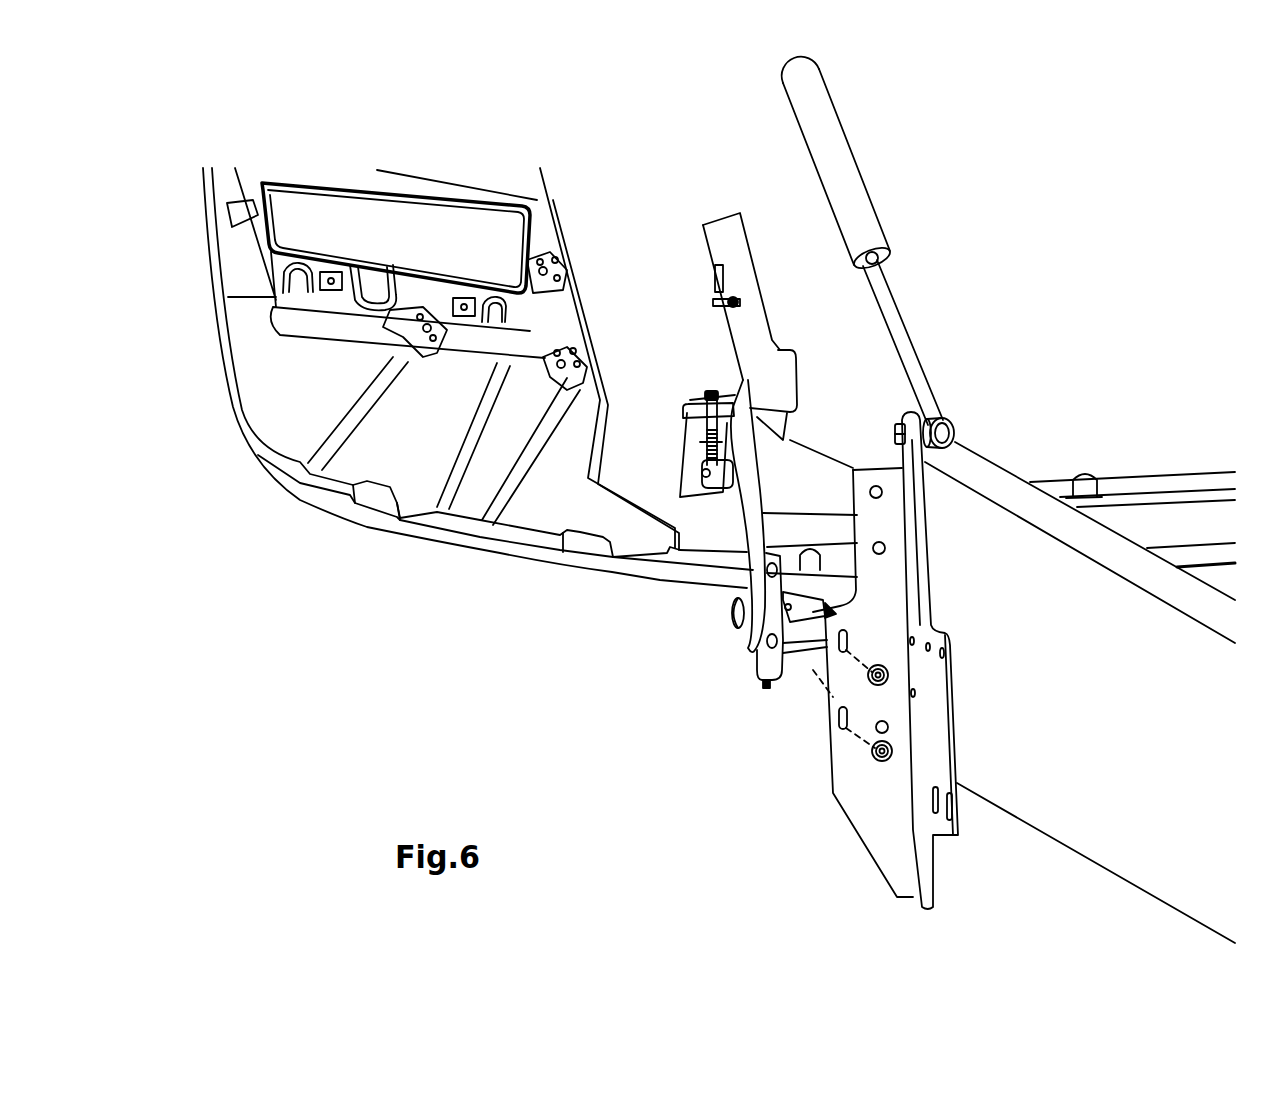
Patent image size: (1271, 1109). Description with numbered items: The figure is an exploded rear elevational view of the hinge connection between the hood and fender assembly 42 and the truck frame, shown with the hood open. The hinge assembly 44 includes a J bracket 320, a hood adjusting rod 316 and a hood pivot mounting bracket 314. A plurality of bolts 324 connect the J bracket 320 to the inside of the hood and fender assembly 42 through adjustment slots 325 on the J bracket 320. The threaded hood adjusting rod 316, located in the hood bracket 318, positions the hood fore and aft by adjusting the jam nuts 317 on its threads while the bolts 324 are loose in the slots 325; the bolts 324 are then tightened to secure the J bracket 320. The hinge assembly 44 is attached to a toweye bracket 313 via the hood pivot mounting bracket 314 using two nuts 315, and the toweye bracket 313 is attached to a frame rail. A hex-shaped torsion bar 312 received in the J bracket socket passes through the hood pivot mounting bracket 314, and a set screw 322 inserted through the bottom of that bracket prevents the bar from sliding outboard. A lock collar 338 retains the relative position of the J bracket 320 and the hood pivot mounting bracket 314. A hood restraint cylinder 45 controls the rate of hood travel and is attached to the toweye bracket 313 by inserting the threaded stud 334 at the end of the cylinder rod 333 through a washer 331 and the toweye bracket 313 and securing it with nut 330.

The hood and fender assembly 42 is at (465, 523).
The hinge assembly 44 is at (716, 600).
The hood restraint cylinder 45 is at (886, 192).
The hex-shaped torsion bar 312 is at (803, 657).
The toweye bracket 313 is at (847, 770).
The hood pivot mounting bracket 314 is at (767, 663).
The nut 315 is at (875, 760).
The hood adjusting rod 316 is at (712, 437).
The jam nut 317 is at (700, 428).
The hood bracket 318 is at (705, 415).
The J bracket 320 is at (743, 503).
The set screw 322 is at (768, 688).
The bolt 324 is at (713, 302).
The adjustment slot 325 is at (719, 280).
The nut 330 is at (895, 434).
The washer 331 is at (912, 455).
The hood restraint cylinder rod 333 is at (903, 342).
The threaded stud 334 is at (945, 416).
The lock collar 338 is at (838, 613).